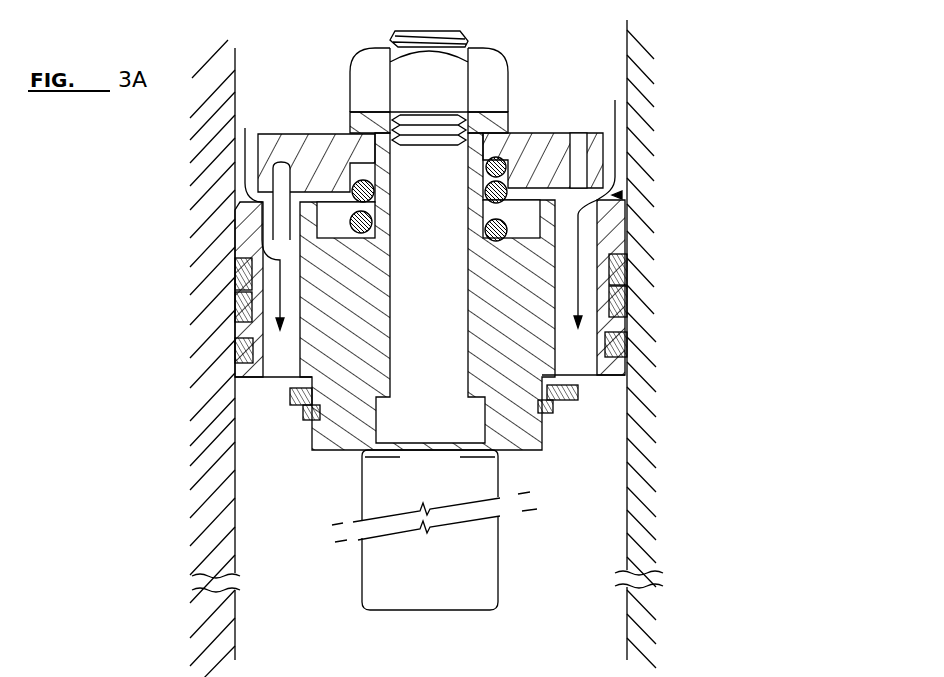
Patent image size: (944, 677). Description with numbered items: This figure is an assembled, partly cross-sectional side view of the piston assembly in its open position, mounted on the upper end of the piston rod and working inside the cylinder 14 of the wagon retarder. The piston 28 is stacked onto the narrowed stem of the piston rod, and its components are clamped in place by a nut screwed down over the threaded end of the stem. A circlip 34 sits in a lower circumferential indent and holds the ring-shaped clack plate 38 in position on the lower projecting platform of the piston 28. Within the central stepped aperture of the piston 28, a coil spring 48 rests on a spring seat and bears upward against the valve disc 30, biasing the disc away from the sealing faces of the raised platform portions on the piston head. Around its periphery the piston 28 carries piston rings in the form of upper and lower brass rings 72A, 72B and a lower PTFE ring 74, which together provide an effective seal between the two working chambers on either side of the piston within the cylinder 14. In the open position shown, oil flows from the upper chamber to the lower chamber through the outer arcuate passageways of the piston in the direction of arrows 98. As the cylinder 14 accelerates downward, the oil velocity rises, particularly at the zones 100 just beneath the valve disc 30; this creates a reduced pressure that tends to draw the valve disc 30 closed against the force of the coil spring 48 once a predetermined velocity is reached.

The cylinder 14 is at (214, 405).
The piston 28 is at (637, 232).
The valve disc 30 is at (537, 140).
The circlip 34 is at (555, 413).
The clack plate 38 is at (578, 395).
The coil spring 48 is at (345, 192).
The upper brass ring 72A is at (627, 264).
The lower brass ring 72B is at (628, 304).
The lower PTFE ring 74 is at (627, 348).
The arrows 98 is at (248, 186).
The zones 100 is at (622, 195).